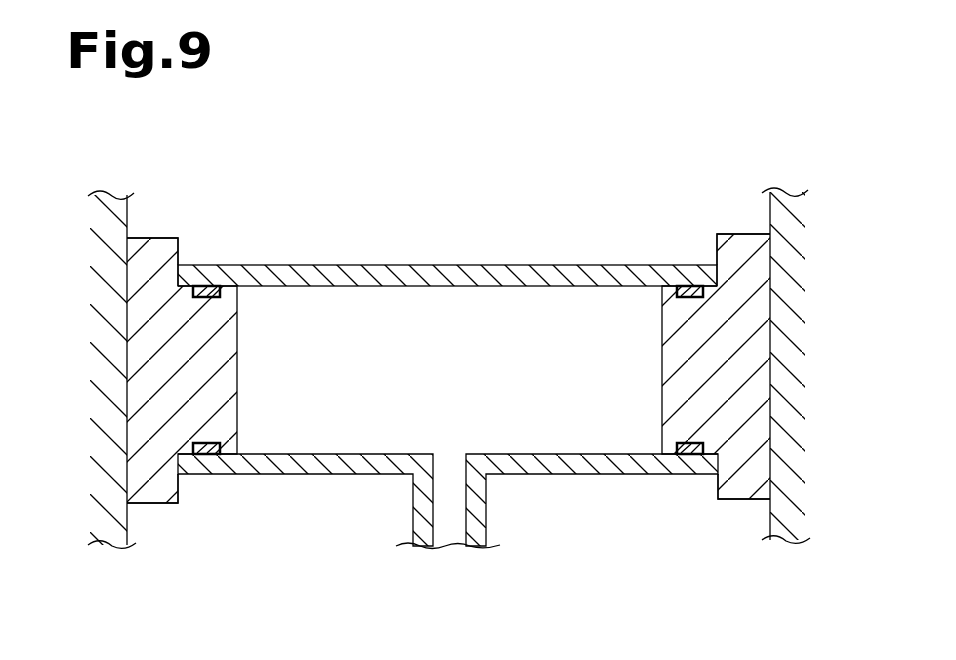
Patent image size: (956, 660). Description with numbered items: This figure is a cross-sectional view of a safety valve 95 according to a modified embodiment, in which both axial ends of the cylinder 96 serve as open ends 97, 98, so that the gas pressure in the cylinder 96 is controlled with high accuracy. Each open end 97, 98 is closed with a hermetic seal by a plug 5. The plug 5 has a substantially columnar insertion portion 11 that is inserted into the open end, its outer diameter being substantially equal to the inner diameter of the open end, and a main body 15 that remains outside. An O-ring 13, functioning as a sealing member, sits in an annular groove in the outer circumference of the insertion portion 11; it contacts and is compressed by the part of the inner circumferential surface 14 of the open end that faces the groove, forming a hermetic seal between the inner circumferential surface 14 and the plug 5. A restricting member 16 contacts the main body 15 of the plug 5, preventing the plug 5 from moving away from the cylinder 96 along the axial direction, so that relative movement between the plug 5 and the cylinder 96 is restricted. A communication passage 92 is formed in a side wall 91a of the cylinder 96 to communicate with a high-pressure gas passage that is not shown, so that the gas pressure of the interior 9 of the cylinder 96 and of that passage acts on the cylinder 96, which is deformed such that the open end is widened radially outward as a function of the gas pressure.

The safety valve 95 is at (600, 148).
The restricting member 16 is at (111, 196).
The main body 15 is at (160, 250).
The insertion portion 11 is at (222, 347).
The plug 5 is at (153, 504).
The cylinder 96 is at (447, 265).
The open end 97 is at (193, 275).
The open end 98 is at (691, 269).
The inner circumferential surface 14 is at (250, 284).
The O-ring 13 is at (223, 477).
The side wall 91a is at (367, 471).
The communication passage 92 is at (455, 507).
The interior 9 is at (460, 389).